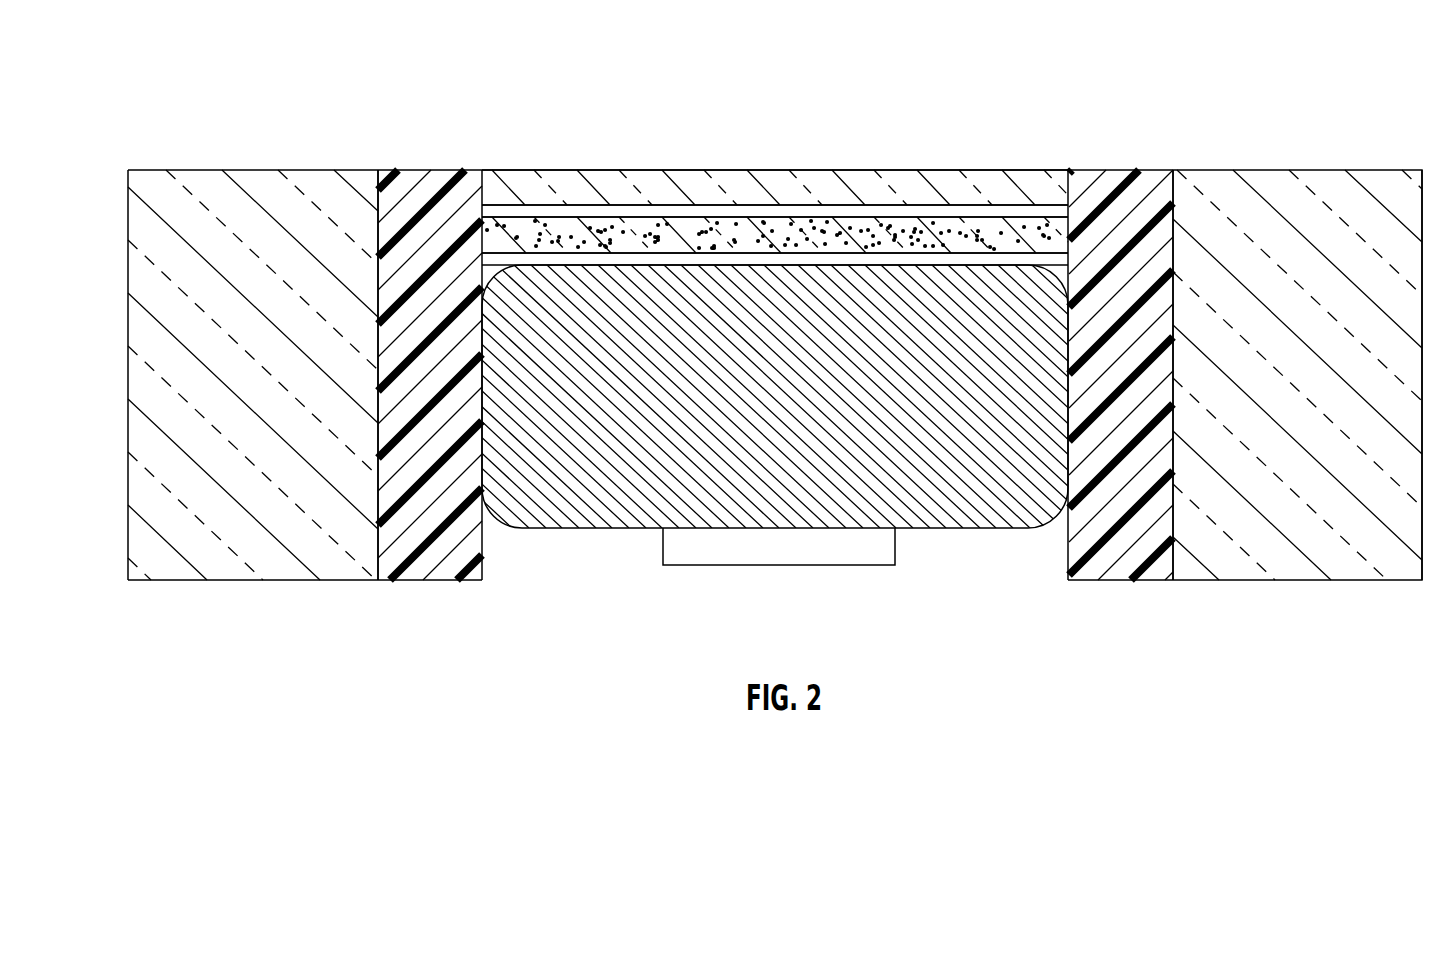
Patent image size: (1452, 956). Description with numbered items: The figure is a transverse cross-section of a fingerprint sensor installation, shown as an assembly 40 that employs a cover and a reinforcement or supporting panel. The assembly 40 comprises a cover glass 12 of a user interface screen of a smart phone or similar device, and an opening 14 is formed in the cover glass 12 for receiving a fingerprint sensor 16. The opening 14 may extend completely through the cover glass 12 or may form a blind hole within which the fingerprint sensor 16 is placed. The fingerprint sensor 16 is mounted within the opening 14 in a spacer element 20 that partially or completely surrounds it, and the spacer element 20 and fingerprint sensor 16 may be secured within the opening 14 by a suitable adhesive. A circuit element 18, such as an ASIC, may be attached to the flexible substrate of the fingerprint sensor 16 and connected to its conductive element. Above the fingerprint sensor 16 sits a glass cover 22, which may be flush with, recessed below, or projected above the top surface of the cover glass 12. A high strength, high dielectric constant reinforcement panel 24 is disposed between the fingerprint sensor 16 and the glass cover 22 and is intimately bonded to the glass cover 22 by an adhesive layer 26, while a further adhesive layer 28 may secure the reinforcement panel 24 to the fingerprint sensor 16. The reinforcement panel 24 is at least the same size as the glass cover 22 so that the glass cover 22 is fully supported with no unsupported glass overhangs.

The assembly 40 is at (496, 57).
The cover glass 12 is at (1329, 162).
The opening 14 is at (1168, 558).
The fingerprint sensor 16 is at (990, 543).
The circuit element 18 is at (833, 565).
The spacer element 20 is at (413, 163).
The glass cover 22 is at (907, 162).
The reinforcement panel 24 is at (553, 212).
The adhesive layer 26 is at (640, 205).
The adhesive layer 28 is at (750, 265).